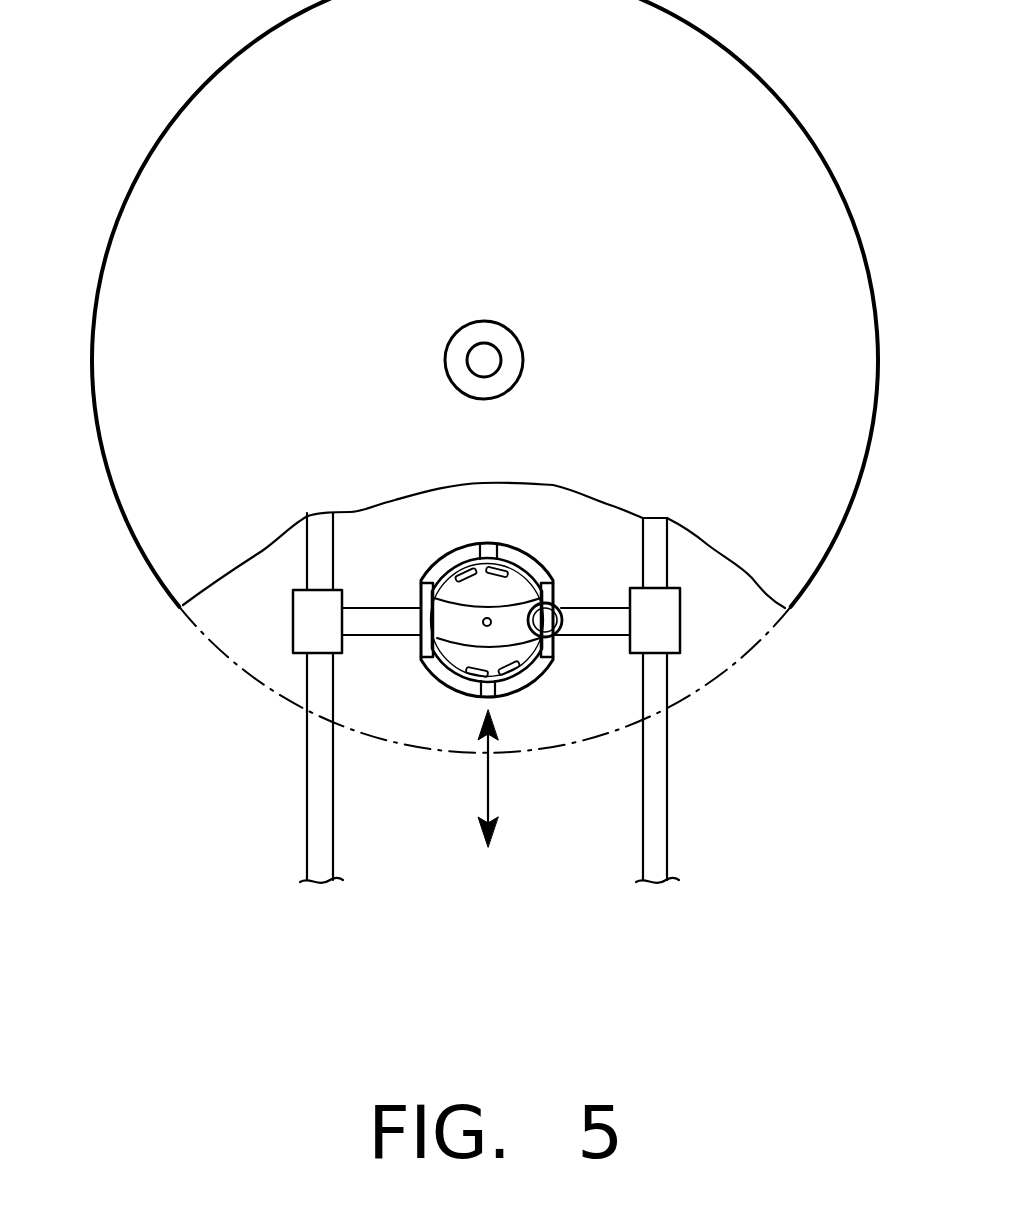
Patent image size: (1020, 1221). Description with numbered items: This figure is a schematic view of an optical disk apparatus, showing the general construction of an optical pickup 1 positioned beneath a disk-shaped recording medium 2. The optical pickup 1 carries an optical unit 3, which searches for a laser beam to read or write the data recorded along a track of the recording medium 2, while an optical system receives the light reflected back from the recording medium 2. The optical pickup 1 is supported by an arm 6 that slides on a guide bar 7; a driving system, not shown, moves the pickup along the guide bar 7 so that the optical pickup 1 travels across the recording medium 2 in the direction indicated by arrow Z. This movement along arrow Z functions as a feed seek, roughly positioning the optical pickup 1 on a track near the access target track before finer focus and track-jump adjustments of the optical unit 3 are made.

The optical pickup 1 is at (438, 711).
The recording medium 2 is at (816, 184).
The optical unit 3 is at (556, 607).
The arm 6 is at (383, 618).
The guide bar 7 is at (308, 820).
The arrow Z is at (492, 798).